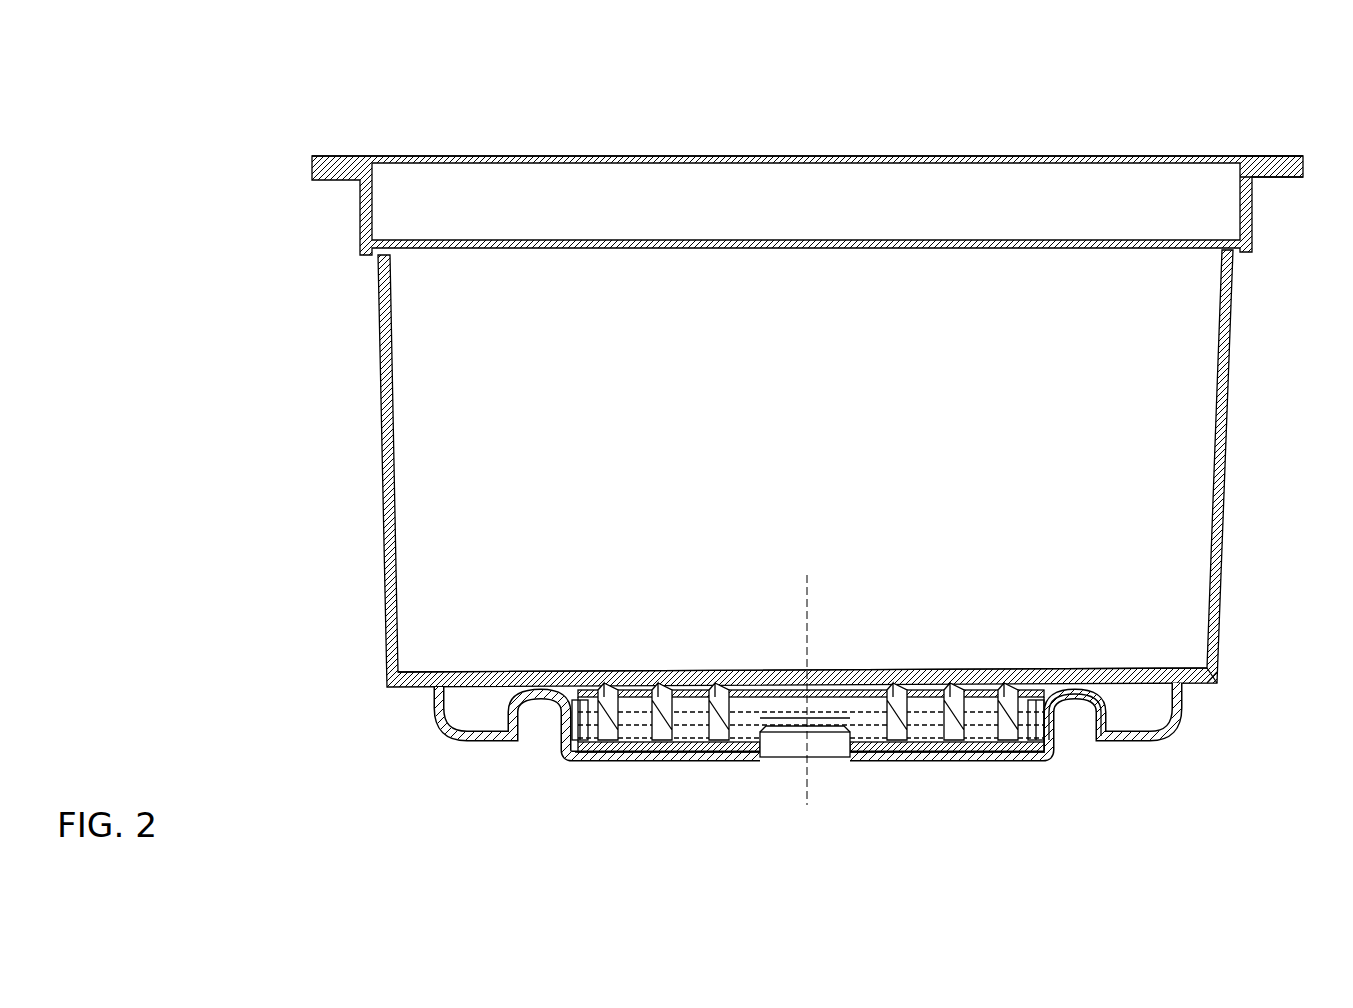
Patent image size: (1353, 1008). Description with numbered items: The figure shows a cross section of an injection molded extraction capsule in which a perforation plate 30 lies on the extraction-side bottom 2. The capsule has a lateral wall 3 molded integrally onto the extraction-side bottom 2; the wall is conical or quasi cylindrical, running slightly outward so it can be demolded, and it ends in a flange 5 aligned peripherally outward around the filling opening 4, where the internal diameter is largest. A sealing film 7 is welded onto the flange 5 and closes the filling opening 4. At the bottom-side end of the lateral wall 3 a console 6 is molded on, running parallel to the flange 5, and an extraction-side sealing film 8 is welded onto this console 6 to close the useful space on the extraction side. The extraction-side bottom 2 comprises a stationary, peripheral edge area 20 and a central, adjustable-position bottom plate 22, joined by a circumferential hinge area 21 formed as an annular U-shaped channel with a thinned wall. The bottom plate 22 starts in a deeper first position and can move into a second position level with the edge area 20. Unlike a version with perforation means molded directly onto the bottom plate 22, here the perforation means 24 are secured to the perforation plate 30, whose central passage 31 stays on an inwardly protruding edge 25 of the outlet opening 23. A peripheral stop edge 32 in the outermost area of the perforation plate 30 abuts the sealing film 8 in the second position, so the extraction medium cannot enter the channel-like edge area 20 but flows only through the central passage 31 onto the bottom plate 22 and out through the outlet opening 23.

The extraction-side bottom 2 is at (650, 772).
The lateral wall 3 is at (1232, 387).
The filling opening 4 is at (784, 140).
The flange 5 is at (1285, 152).
The console 6 is at (1225, 683).
The sealing film 7 is at (917, 155).
The sealing film 8 is at (1115, 668).
The edge area 20 is at (1140, 748).
The hinge area 21 is at (1080, 735).
The bottom plate 22 is at (992, 752).
The outlet opening 23 is at (795, 757).
The perforation means 24 is at (905, 748).
The inwardly protruding edge 25 is at (845, 690).
The perforation plate 30 is at (698, 752).
The central passage 31 is at (770, 720).
The peripheral stop edge 32 is at (585, 752).